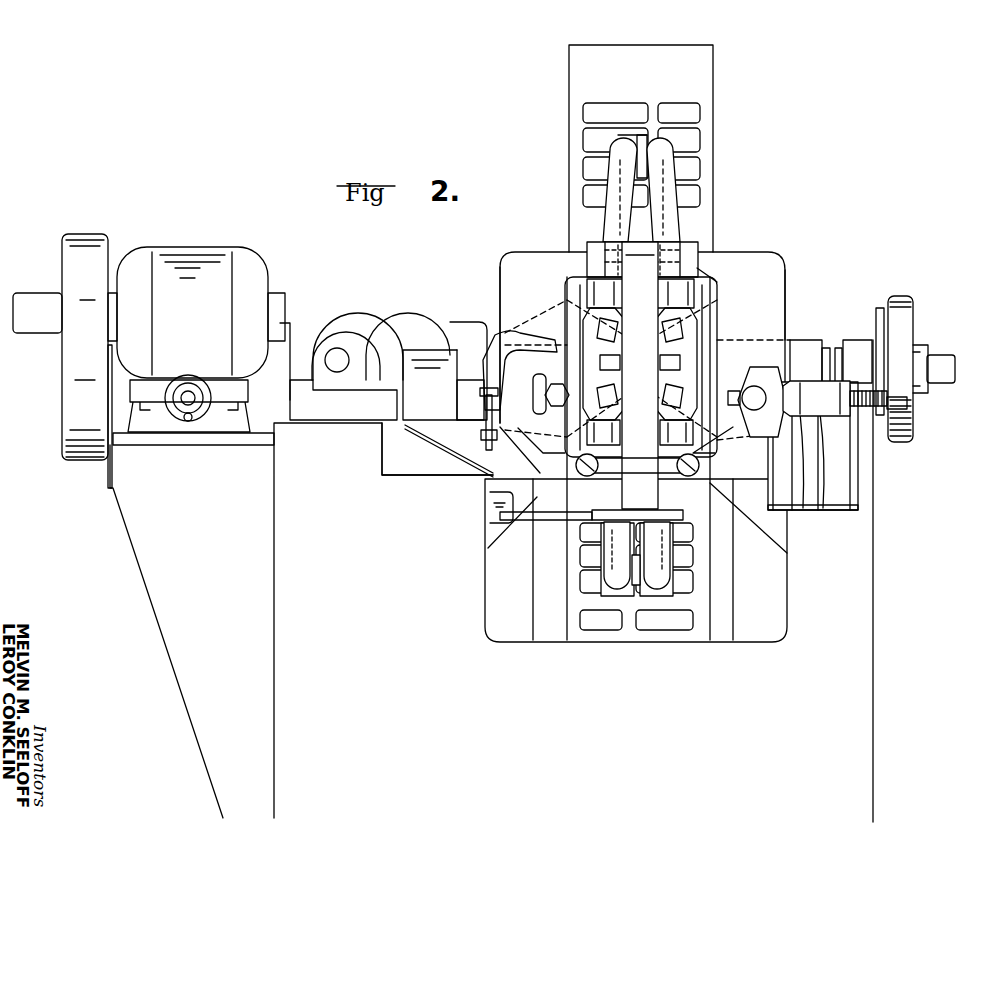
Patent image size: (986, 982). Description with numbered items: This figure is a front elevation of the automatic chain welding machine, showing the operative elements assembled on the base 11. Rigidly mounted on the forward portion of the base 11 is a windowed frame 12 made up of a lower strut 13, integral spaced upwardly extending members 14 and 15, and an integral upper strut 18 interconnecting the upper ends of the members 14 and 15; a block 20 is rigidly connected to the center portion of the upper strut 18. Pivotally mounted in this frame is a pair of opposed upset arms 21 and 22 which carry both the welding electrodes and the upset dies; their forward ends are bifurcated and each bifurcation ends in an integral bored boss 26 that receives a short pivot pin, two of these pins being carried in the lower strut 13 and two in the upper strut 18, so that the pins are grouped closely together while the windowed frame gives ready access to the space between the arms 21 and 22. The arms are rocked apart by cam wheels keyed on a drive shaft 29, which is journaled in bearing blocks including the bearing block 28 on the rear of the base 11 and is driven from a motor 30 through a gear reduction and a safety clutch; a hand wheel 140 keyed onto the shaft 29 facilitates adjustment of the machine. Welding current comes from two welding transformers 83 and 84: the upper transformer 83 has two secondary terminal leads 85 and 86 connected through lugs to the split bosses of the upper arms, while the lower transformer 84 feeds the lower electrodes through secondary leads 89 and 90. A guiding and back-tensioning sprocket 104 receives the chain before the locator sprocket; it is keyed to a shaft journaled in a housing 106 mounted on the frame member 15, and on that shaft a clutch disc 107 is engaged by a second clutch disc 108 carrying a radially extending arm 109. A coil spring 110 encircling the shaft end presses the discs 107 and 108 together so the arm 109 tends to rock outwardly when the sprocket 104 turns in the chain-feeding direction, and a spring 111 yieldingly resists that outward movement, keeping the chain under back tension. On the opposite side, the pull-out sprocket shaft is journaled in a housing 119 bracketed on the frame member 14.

The base 11 is at (863, 592).
The windowed frame 12 is at (796, 262).
The lower strut 13 is at (688, 478).
The upwardly extending member 14 is at (500, 302).
The upwardly extending member 15 is at (775, 307).
The upper strut 18 is at (572, 267).
The block 20 is at (687, 250).
The upset arm 21 is at (565, 290).
The upset arm 22 is at (710, 287).
The bored boss 26 is at (697, 268).
The bearing block 28 is at (810, 340).
The drive shaft 29 is at (938, 362).
The motor 30 is at (207, 265).
The welding transformer 83 is at (687, 145).
The welding transformer 84 is at (660, 623).
The secondary terminal lead 85 is at (617, 225).
The secondary terminal lead 86 is at (670, 232).
The secondary lead 89 is at (610, 558).
The secondary lead 90 is at (677, 572).
The guiding and back-tensioning sprocket 104 is at (753, 437).
The housing 106 is at (800, 512).
The clutch disc 107 is at (843, 422).
The second clutch disc 108 is at (856, 383).
The radially extending arm 109 is at (853, 493).
The coil spring 110 is at (905, 402).
The spring 111 is at (843, 520).
The housing 119 is at (467, 400).
The hand wheel 140 is at (905, 305).